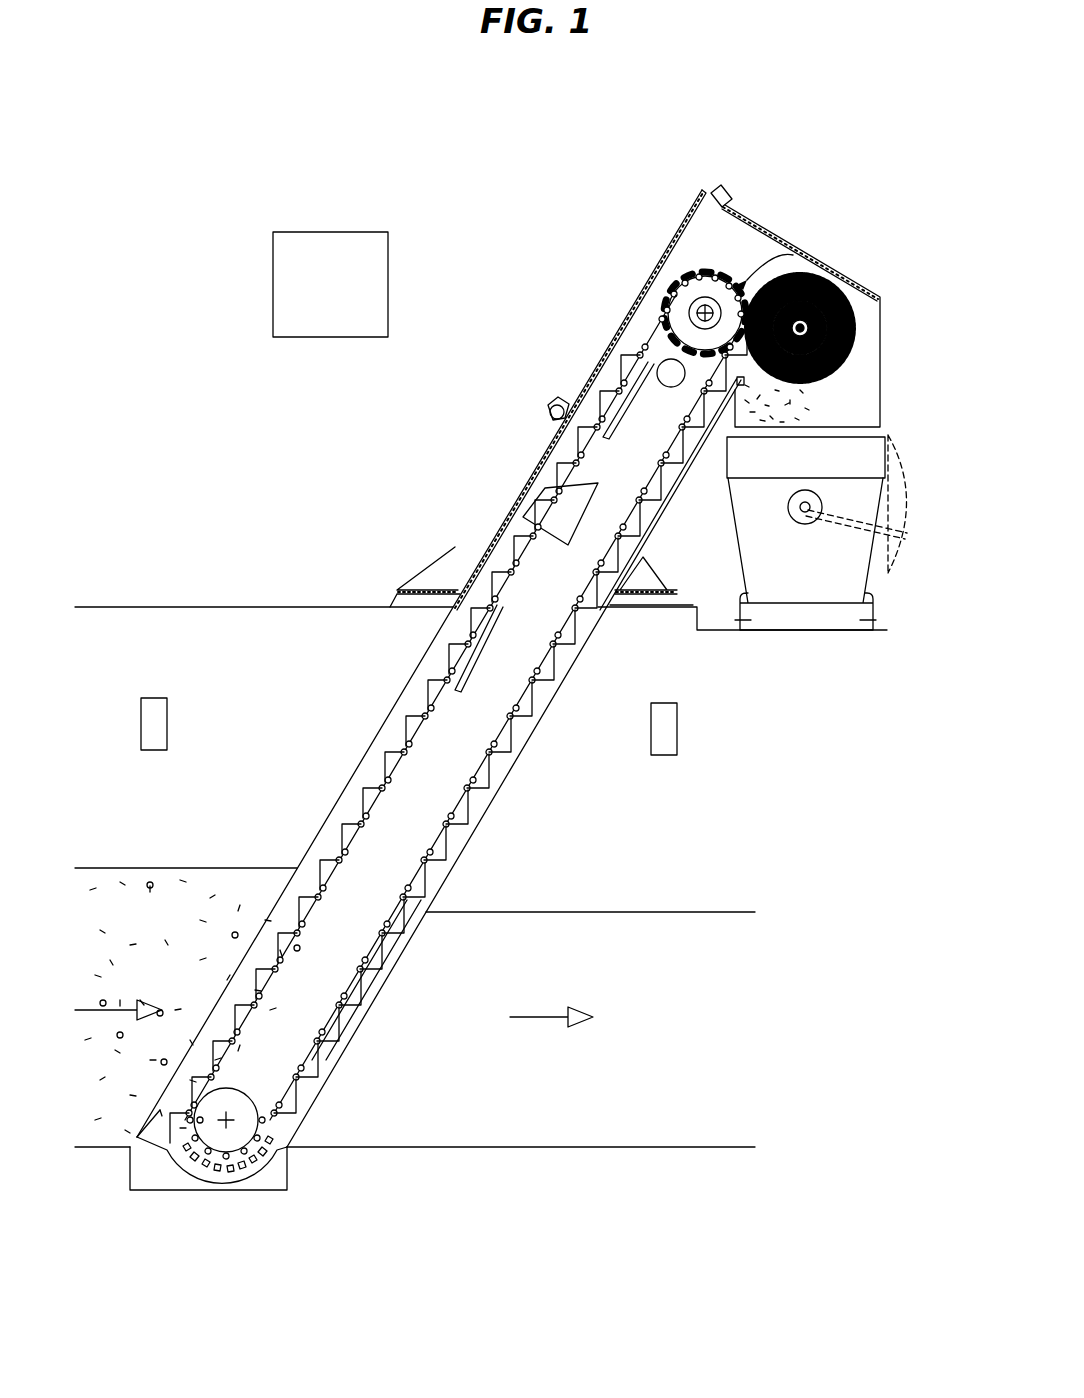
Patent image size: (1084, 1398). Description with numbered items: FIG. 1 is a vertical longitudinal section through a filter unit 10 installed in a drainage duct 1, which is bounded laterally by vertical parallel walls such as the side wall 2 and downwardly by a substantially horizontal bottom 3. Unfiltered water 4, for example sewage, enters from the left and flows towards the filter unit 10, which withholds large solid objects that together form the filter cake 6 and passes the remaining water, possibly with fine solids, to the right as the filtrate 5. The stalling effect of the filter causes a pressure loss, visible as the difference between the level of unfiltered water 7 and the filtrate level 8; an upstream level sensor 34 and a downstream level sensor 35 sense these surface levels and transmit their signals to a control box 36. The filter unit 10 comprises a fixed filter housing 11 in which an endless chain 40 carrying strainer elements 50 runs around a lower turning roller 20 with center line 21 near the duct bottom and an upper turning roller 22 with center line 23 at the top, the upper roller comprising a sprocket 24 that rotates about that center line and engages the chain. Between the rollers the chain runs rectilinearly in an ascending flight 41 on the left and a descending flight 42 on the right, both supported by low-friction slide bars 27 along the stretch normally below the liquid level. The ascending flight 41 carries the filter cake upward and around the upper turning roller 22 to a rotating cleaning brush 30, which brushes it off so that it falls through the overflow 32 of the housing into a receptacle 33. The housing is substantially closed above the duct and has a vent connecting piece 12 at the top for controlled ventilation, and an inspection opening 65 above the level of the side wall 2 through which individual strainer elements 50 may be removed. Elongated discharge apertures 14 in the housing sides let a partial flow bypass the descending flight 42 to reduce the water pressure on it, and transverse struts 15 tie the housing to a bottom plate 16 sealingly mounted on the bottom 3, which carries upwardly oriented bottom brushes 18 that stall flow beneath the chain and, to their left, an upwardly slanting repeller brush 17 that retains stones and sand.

The drainage duct 1 is at (210, 712).
The side wall 2 is at (263, 640).
The bottom 3 is at (575, 1147).
The unfiltered water 4 is at (102, 903).
The filtrate 5 is at (605, 958).
The filter cake 6 is at (815, 402).
The level of unfiltered water 7 is at (193, 866).
The filtrate level 8 is at (570, 905).
The filter unit 10 is at (448, 514).
The filter housing 11 is at (540, 440).
The vent connecting piece 12 is at (730, 188).
The discharge apertures 14 is at (327, 1053).
The transverse struts 15 is at (360, 758).
The bottom plate 16 is at (273, 1167).
The repeller brush 17 is at (170, 1128).
The bottom brushes 18 is at (187, 1153).
The lower turning roller 20 is at (240, 1107).
The center line 21 is at (240, 1128).
The upper turning roller 22 is at (683, 300).
The center line 23 is at (700, 300).
The sprocket 24 is at (683, 333).
The slide bars 27 is at (655, 438).
The cleaning brush 30 is at (803, 270).
The overflow 32 is at (852, 417).
The receptacle 33 is at (840, 537).
The upstream level sensor 34 is at (141, 725).
The downstream level sensor 35 is at (677, 718).
The control box 36 is at (273, 242).
The endless chain 40 is at (440, 680).
The ascending flight 41 is at (400, 720).
The descending flight 42 is at (497, 773).
The strainer elements 50 is at (468, 628).
The inspection opening 65 is at (562, 513).